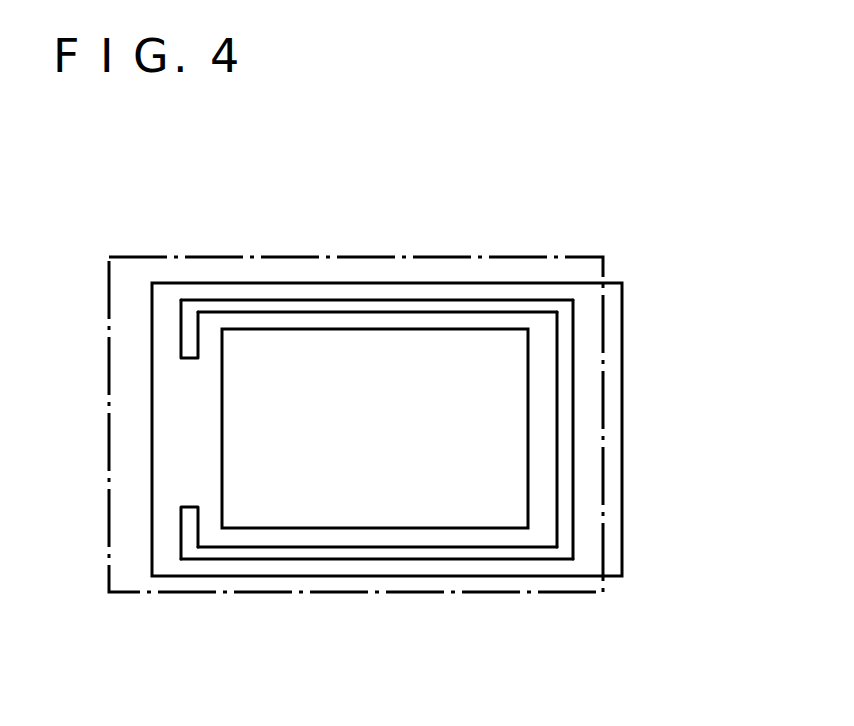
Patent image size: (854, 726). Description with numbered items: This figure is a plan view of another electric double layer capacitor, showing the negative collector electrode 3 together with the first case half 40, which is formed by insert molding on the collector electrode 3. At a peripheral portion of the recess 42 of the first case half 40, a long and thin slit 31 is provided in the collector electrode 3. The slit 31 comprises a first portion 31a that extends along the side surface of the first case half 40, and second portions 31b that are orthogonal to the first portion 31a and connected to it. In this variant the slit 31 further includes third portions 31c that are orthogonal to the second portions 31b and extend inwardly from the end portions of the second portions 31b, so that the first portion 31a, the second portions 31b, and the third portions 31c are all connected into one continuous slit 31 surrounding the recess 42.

The negative collector electrode 3 is at (583, 427).
The slit 31 is at (387, 388).
The first portion 31a is at (573, 342).
The second portions 31b is at (347, 308).
The third portions 31c is at (181, 335).
The first case half 40 is at (560, 257).
The recess 42 is at (290, 528).